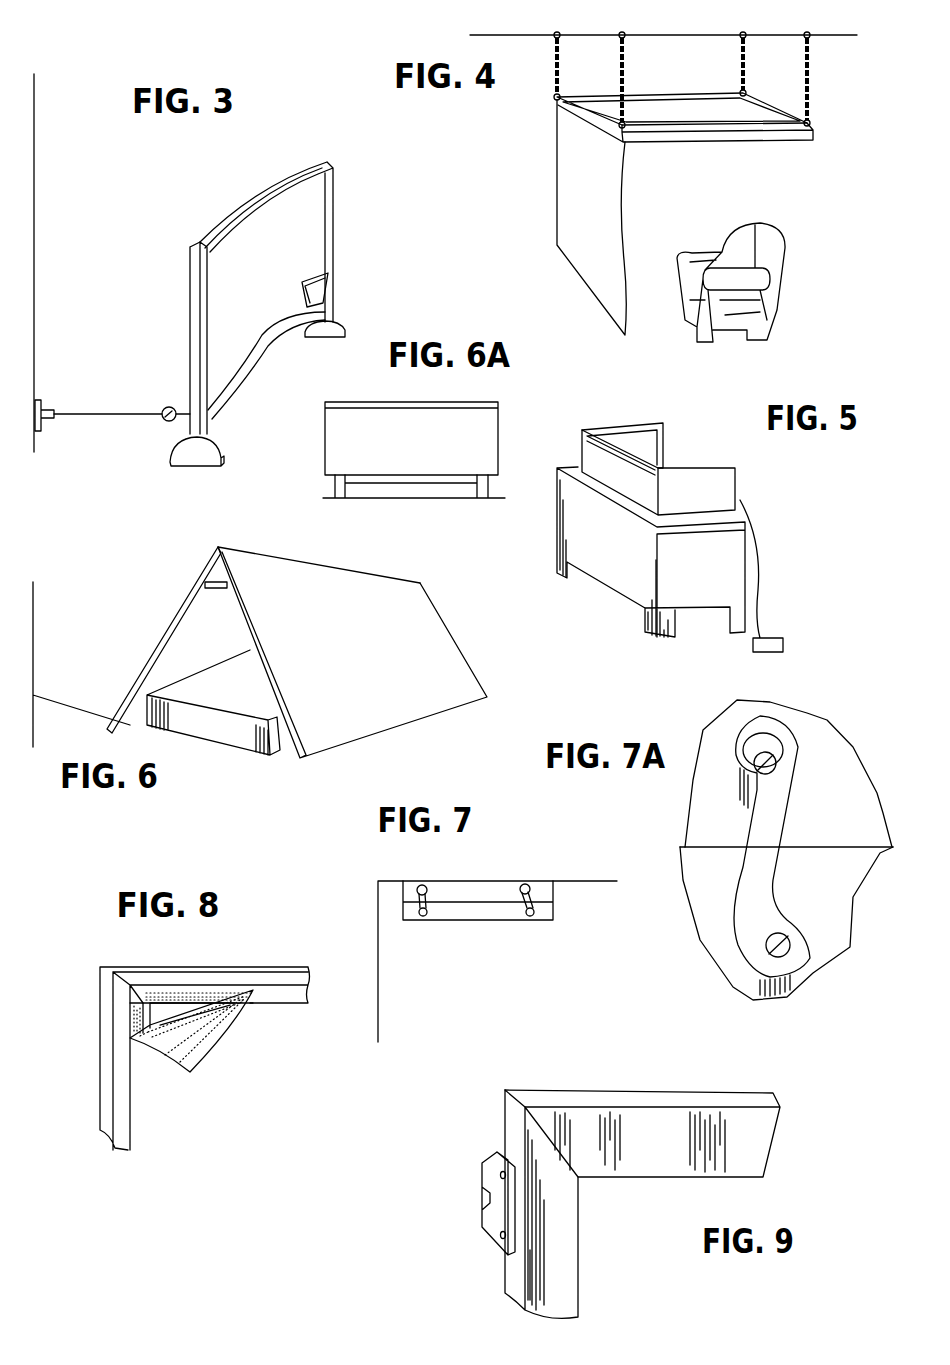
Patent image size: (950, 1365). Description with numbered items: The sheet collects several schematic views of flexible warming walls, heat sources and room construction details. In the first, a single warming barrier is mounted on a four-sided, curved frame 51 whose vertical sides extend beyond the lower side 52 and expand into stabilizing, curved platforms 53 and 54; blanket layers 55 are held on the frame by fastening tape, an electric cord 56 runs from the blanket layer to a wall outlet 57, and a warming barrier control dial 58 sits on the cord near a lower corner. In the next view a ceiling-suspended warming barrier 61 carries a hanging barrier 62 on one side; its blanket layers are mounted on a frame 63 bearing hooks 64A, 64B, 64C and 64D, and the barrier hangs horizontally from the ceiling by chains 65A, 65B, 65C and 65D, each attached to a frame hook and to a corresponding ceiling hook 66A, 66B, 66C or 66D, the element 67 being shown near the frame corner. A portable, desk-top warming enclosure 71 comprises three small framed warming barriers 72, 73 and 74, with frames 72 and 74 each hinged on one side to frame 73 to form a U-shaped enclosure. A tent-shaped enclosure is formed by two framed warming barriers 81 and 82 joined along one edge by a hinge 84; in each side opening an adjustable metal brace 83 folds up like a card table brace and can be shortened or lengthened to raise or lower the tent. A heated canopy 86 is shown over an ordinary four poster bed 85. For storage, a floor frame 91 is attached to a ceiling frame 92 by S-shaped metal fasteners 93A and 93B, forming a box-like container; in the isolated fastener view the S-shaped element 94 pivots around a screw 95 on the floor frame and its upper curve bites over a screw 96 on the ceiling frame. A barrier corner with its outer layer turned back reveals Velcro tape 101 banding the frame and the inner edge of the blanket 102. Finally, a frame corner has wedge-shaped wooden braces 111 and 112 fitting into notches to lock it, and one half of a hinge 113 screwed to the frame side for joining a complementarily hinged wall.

In FIG. 3, the curved frame 51 is at (190, 294).
In FIG. 3, the lower side 52 is at (243, 368).
In FIG. 3, the stabilizing curved platform 53 is at (198, 446).
In FIG. 3, the stabilizing curved platform 54 is at (346, 329).
In FIG. 3, the blanket layers 55 is at (245, 225).
In FIG. 3, the electric cord 56 is at (122, 412).
In FIG. 3, the wall outlet 57 is at (47, 400).
In FIG. 3, the warming barrier control dial 58 is at (172, 407).
In FIG. 4, the ceiling-suspended warming barrier 61 is at (767, 118).
In FIG. 4, the hanging barrier 62 is at (603, 257).
In FIG. 4, the frame 63 is at (753, 140).
In FIG. 4, the hook 64A is at (812, 125).
In FIG. 4, the hook 64B is at (625, 127).
In FIG. 4, the hook 64C is at (556, 101).
In FIG. 4, the hook 64D is at (745, 93).
In FIG. 4, the chain 65A is at (812, 63).
In FIG. 4, the chain 65B is at (624, 98).
In FIG. 4, the chain 65C is at (553, 90).
In FIG. 4, the chain 65D is at (746, 63).
In FIG. 4, the hook 66A is at (808, 32).
In FIG. 4, the hook 66B is at (663, 26).
In FIG. 4, the hook 66C is at (597, 26).
In FIG. 4, the hook 66D is at (741, 36).
In FIG. 4, the frame corner 67 is at (587, 107).
In FIG. 5, the portable desk-top warming enclosure 71 is at (685, 457).
In FIG. 5, the framed warming barrier 72 is at (645, 427).
In FIG. 5, the framed warming barrier 73 is at (600, 455).
In FIG. 5, the framed warming barrier 74 is at (717, 493).
In FIG. 6, the framed warming barrier 81 is at (440, 667).
In FIG. 6, the framed warming barrier 82 is at (157, 653).
In FIG. 6, the metal brace 83 is at (215, 585).
In FIG. 6, the hinge 84 is at (332, 565).
In FIG. 6A, the four poster bed 85 is at (425, 479).
In FIG. 6A, the heated canopy 86 is at (460, 420).
In FIG. 7A, the floor frame 91 is at (786, 923).
In FIG. 7, the floor frame 91 is at (485, 920).
In FIG. 7A, the ceiling frame 92 is at (788, 773).
In FIG. 7, the ceiling frame 92 is at (490, 893).
In FIG. 7, the S-shaped metal fastener 93A is at (422, 917).
In FIG. 7, the S-shaped metal fastener 93B is at (532, 916).
In FIG. 7A, the S-shaped element 94 is at (773, 827).
In FIG. 7A, the screw 95 is at (792, 940).
In FIG. 7A, the screw 96 is at (770, 752).
In FIG. 8, the Velcro tape 101 is at (207, 997).
In FIG. 8, the blanket 102 is at (200, 1022).
In FIG. 9, the wedge-shaped wooden brace 111 is at (578, 1227).
In FIG. 9, the wedge-shaped wooden brace 112 is at (620, 1178).
In FIG. 9, the hinge half 113 is at (493, 1153).